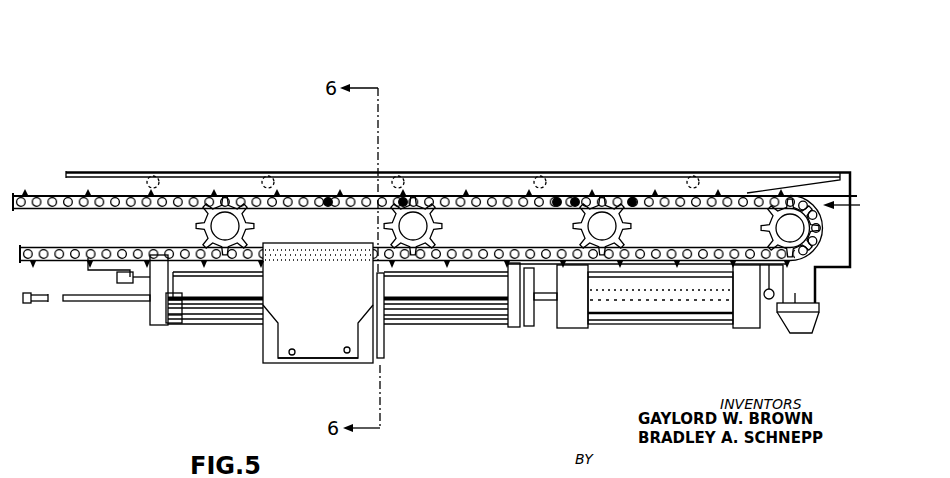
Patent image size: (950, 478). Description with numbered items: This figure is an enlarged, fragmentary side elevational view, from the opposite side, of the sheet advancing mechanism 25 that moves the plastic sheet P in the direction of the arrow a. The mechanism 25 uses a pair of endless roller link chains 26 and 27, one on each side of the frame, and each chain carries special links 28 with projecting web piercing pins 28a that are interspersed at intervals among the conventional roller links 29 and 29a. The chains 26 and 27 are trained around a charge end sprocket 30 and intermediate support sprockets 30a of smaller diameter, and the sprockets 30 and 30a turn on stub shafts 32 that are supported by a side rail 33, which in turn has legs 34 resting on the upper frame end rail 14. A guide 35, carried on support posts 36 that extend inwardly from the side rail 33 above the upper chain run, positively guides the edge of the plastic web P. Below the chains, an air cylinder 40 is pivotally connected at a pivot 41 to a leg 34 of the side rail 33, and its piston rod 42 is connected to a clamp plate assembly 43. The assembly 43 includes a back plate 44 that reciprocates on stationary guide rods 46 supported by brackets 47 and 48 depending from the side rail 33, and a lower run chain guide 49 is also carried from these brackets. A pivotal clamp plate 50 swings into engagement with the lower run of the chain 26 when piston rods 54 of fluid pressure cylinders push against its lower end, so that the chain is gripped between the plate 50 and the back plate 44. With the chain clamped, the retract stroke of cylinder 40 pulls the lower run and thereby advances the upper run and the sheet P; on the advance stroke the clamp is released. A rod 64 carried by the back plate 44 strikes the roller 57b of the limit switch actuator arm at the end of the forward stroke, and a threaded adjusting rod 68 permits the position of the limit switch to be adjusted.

The upper frame end rail 14 is at (808, 328).
The sheet advancing mechanism 25 is at (540, 158).
The endless roller link chain 26 is at (300, 193).
The endless roller link chain 27 is at (104, 197).
The special link 28 is at (403, 190).
The plastic web piercing pin 28a is at (328, 192).
The roller link 29 is at (632, 193).
The roller link 29a is at (64, 248).
The charge end sprocket 30 is at (760, 226).
The intermediate support sprocket 30a is at (247, 207).
The stub shaft 32 is at (795, 222).
The side rail 33 is at (838, 268).
The leg 34 is at (795, 293).
The guide 35 is at (780, 183).
The support post 36 is at (158, 178).
The air cylinder 40 is at (668, 313).
The pivotal connection 41 is at (770, 301).
The piston rod 42 is at (543, 300).
The clamp plate assembly 43 is at (260, 352).
The back plate 44 is at (380, 360).
The stationary guide rod 46 is at (438, 300).
The bracket 47 is at (532, 300).
The bracket 48 is at (155, 327).
The lower run chain guide 49 is at (473, 267).
The clamp plate 50 is at (320, 347).
The piston rod 54 is at (292, 356).
The roller 57b is at (125, 284).
The rod 64 is at (223, 300).
The threaded adjusting rod 68 is at (98, 302).
The plastic sheet P is at (557, 193).
The direction arrow a is at (844, 213).